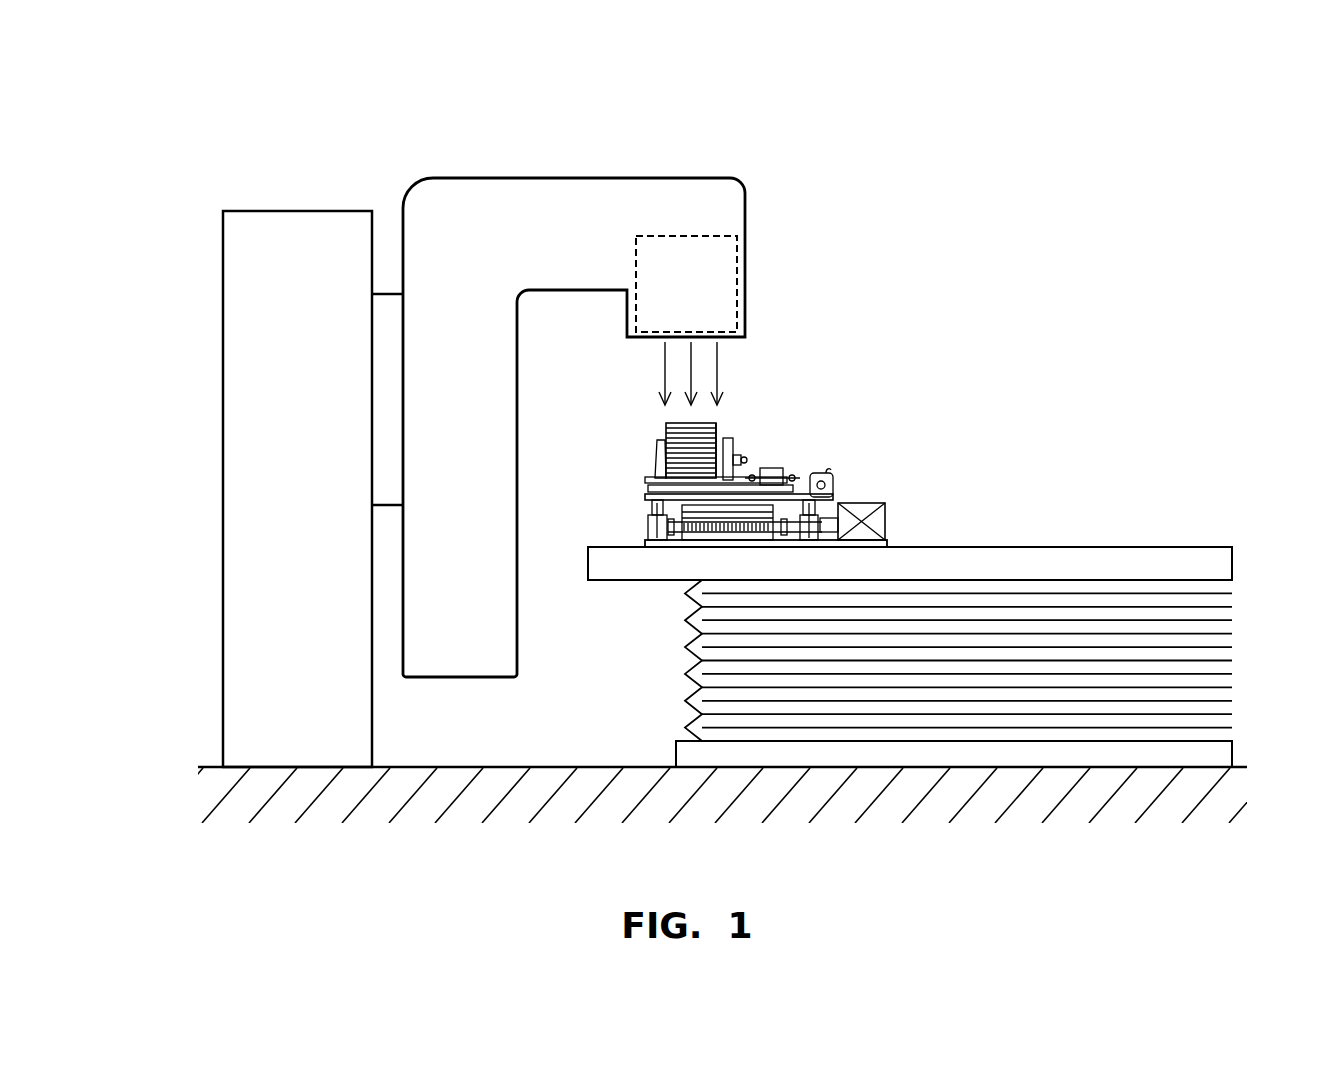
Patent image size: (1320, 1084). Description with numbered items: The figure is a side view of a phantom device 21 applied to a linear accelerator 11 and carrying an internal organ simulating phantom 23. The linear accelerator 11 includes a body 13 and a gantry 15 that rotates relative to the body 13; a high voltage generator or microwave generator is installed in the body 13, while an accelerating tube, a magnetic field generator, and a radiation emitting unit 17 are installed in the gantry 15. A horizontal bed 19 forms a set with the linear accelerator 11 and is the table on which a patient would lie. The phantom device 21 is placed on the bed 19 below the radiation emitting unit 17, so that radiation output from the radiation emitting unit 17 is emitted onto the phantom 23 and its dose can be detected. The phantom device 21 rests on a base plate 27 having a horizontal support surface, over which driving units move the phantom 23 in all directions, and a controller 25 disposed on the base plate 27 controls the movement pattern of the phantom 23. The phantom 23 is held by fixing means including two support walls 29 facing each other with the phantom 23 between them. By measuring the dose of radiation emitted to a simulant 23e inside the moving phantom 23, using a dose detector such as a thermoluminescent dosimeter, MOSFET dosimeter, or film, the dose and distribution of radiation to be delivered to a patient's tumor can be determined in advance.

The linear accelerator 11 is at (341, 158).
The body 13 is at (253, 332).
The gantry 15 is at (483, 214).
The radiation emitting unit 17 is at (745, 280).
The bed 19 is at (1049, 538).
The phantom device 21 is at (752, 465).
The phantom 23 is at (665, 433).
The simulant 23e is at (718, 430).
The controller 25 is at (873, 507).
The base plate 27 is at (645, 545).
The support walls 29 is at (655, 467).